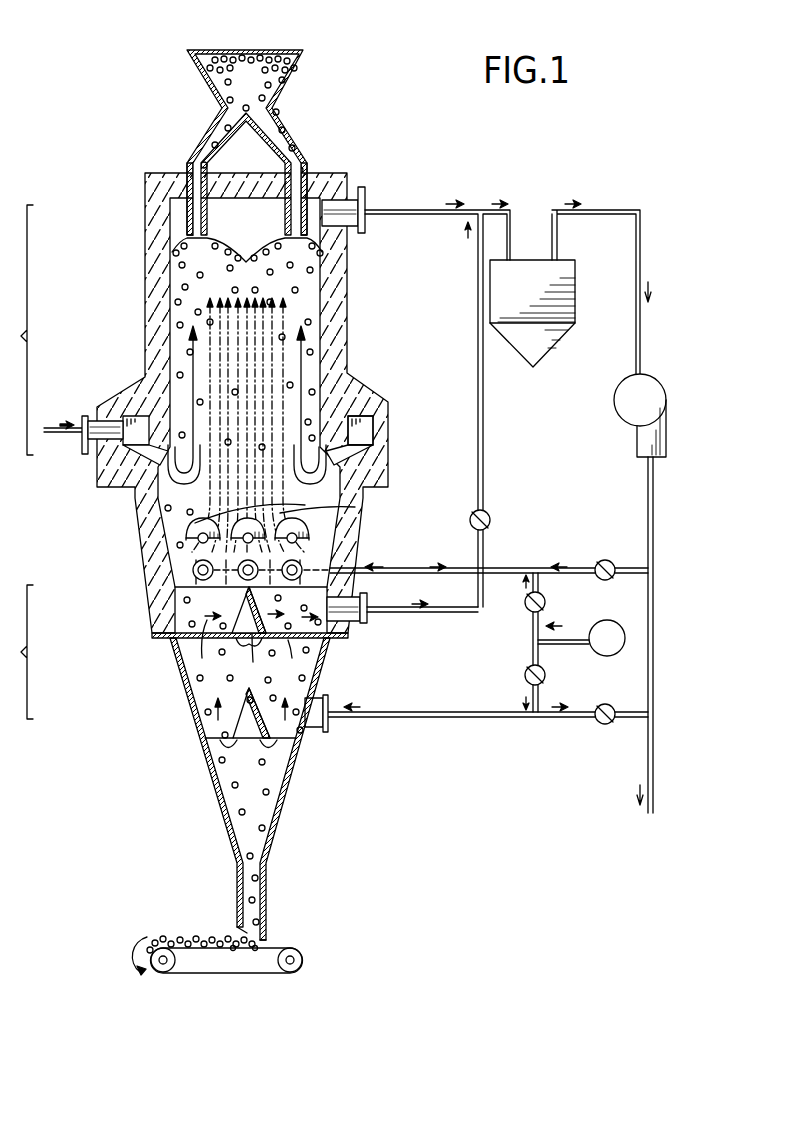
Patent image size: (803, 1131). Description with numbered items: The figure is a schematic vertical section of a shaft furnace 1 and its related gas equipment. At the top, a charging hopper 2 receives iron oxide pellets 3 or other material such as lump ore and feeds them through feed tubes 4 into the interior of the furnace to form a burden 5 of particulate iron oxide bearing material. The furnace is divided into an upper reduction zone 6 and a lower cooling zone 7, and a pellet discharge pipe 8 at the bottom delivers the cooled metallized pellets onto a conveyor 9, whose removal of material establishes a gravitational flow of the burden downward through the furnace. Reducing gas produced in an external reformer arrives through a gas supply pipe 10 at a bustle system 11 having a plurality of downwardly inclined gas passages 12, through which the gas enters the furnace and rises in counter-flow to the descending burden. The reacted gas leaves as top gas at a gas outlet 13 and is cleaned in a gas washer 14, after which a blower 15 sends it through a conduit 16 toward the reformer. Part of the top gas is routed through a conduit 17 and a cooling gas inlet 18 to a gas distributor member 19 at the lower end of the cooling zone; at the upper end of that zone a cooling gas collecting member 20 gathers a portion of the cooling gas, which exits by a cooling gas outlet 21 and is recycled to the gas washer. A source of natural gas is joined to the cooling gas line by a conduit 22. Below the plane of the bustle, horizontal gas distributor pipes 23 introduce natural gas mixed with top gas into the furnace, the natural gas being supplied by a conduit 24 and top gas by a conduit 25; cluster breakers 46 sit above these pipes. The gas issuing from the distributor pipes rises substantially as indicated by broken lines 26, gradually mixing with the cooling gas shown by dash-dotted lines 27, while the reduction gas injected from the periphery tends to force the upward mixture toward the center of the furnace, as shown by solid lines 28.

The shaft furnace 1 is at (135, 563).
The charging hopper 2 is at (287, 80).
The iron oxide pellets 3 is at (254, 96).
The feed tubes 4 is at (308, 165).
The burden 5 is at (212, 294).
The upper reduction zone 6 is at (21, 336).
The lower cooling zone 7 is at (21, 652).
The pellet discharge pipe 8 is at (266, 887).
The conveyor 9 is at (230, 975).
The gas supply pipe 10 is at (54, 426).
The bustle system 11 is at (374, 422).
The downwardly inclined gas passages 12 is at (125, 452).
The gas outlet 13 is at (366, 200).
The gas washer 14 is at (512, 348).
The blower 15 is at (617, 386).
The conduit 16 is at (648, 758).
The conduit 17 is at (567, 719).
The cooling gas inlet 18 is at (325, 697).
The gas distributor member 19 is at (238, 707).
The cooling gas collecting member 20 is at (237, 608).
The cooling gas outlet 21 is at (364, 624).
The conduit 22 is at (530, 688).
The horizontal gas distributor pipes 23 is at (200, 578).
The conduit 24 is at (434, 566).
The conduit 25 is at (583, 567).
The broken lines 26 is at (278, 514).
The dash-dotted lines 27 is at (295, 503).
The solid lines 28 is at (298, 368).
The cluster breakers 46 is at (195, 527).